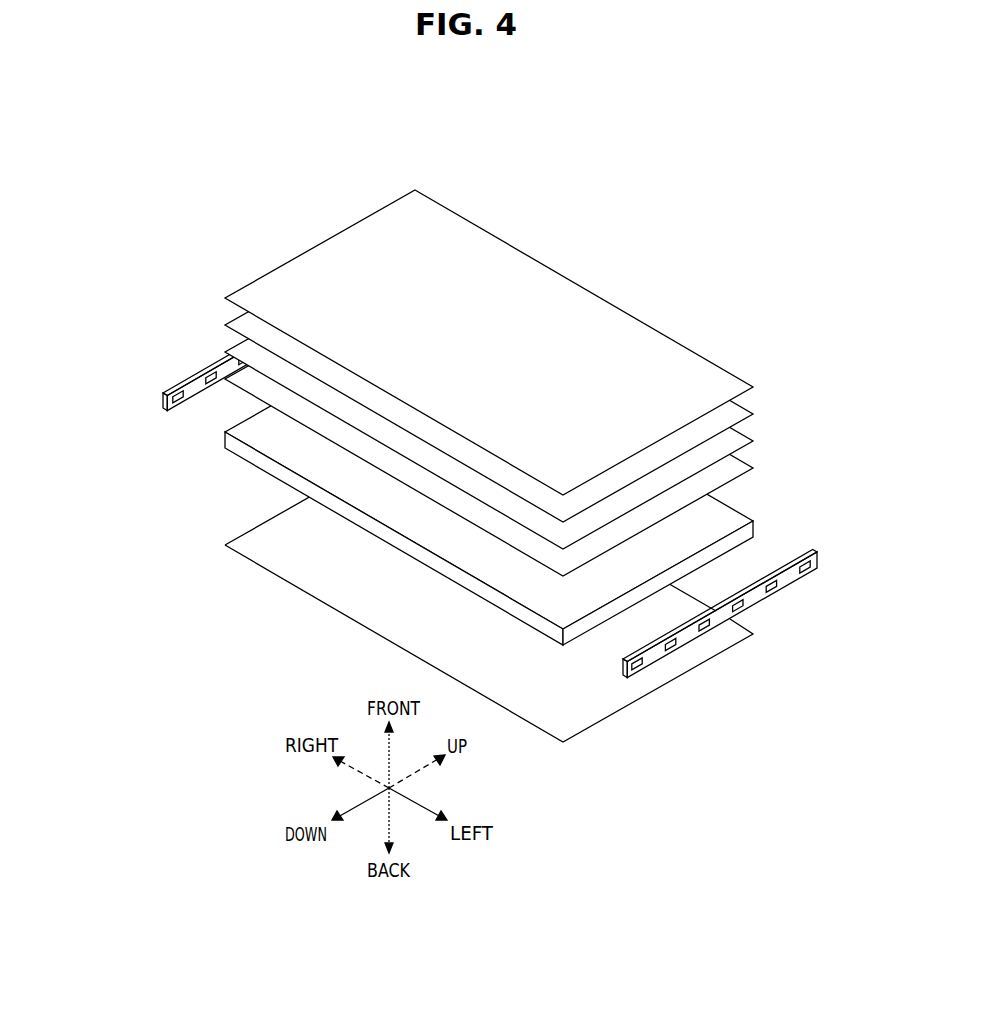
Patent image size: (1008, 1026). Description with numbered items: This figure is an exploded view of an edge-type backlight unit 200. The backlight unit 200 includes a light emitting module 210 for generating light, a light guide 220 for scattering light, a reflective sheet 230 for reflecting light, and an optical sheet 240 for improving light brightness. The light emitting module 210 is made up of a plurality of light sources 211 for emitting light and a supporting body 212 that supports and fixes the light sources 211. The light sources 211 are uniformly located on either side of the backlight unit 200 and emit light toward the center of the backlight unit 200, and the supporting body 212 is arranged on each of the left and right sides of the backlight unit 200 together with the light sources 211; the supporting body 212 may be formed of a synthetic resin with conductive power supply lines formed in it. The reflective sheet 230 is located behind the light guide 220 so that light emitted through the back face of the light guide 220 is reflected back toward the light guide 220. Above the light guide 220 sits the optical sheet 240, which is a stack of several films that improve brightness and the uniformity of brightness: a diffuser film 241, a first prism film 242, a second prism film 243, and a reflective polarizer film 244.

The edge-type backlight unit 200 is at (556, 128).
The light emitting module 210 is at (439, 526).
The light sources 211 is at (176, 392).
The supporting body 212 is at (165, 405).
The light guide 220 is at (238, 450).
The reflective sheet 230 is at (238, 539).
The optical sheet 240 is at (556, 383).
The diffuser film 241 is at (755, 465).
The first prism film 242 is at (755, 438).
The second prism film 243 is at (755, 411).
The reflective polarizer film 244 is at (827, 463).